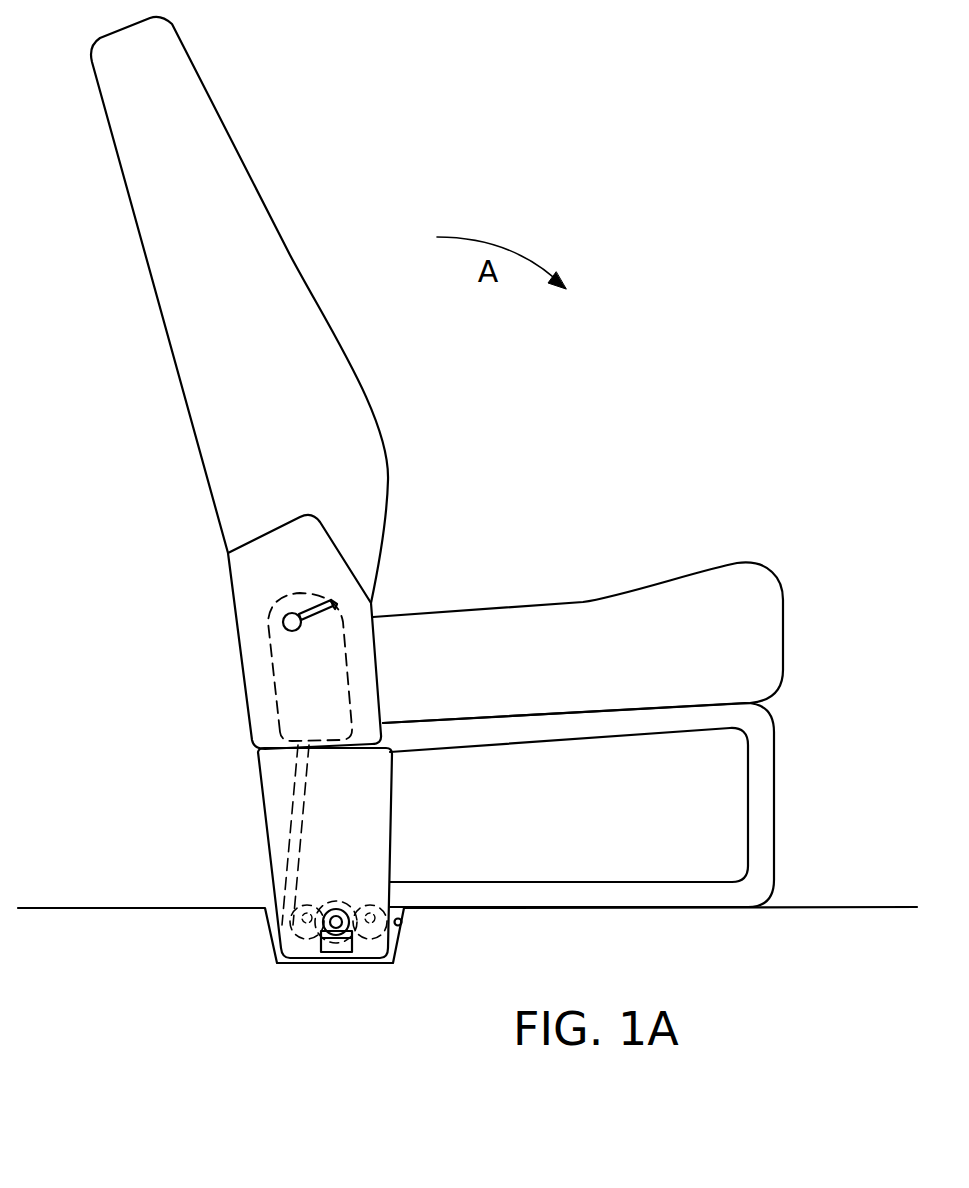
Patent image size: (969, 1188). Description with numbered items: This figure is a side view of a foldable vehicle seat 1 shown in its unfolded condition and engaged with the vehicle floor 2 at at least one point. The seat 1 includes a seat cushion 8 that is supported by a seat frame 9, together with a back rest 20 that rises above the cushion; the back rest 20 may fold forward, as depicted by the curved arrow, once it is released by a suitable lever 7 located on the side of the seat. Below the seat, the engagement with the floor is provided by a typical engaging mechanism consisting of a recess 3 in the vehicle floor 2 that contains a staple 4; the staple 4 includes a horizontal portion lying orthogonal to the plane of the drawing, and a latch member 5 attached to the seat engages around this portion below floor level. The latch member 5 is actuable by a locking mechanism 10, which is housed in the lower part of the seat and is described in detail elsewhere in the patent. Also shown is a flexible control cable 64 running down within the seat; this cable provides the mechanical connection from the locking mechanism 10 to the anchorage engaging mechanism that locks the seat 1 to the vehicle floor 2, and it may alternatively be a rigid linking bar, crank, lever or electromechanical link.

The vehicle seat 1 is at (603, 377).
The vehicle floor 2 is at (833, 909).
The recess 3 is at (401, 926).
The staple 4 is at (334, 907).
The latch member 5 is at (343, 943).
The lever 7 is at (335, 600).
The seat cushion 8 is at (735, 568).
The seat frame 9 is at (770, 795).
The locking mechanism 10 is at (268, 665).
The back rest 20 is at (178, 337).
The flexible control cable 64 is at (297, 812).